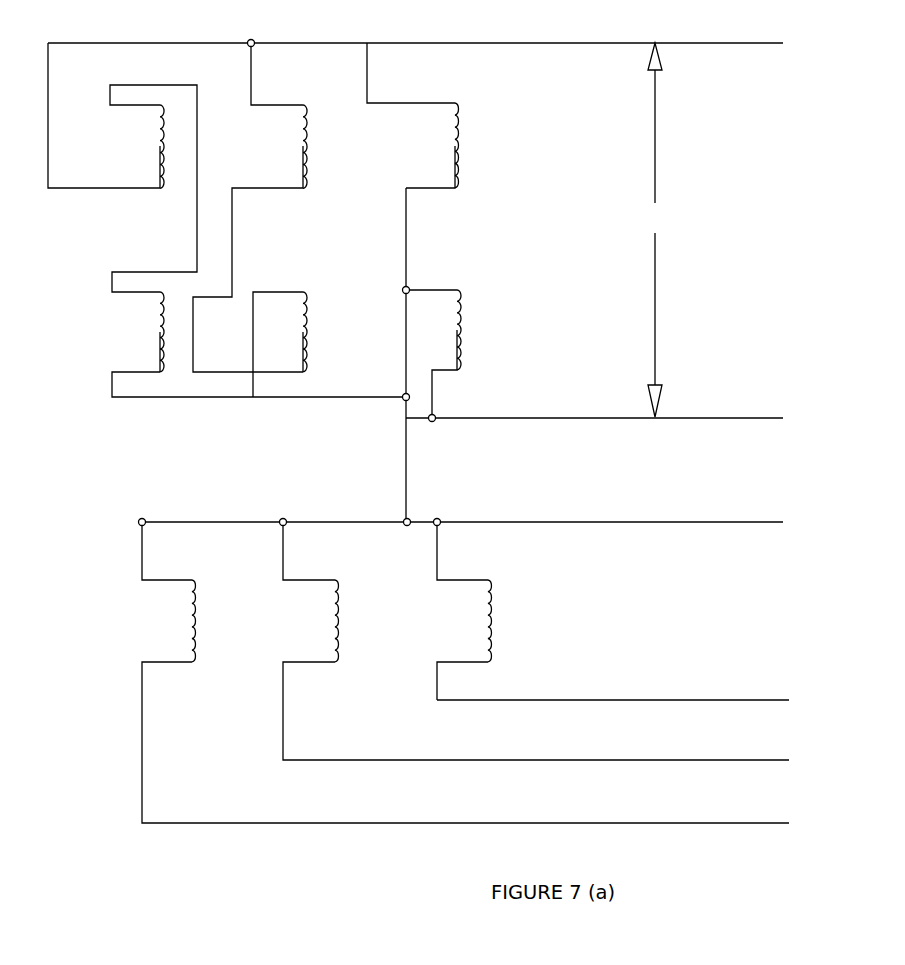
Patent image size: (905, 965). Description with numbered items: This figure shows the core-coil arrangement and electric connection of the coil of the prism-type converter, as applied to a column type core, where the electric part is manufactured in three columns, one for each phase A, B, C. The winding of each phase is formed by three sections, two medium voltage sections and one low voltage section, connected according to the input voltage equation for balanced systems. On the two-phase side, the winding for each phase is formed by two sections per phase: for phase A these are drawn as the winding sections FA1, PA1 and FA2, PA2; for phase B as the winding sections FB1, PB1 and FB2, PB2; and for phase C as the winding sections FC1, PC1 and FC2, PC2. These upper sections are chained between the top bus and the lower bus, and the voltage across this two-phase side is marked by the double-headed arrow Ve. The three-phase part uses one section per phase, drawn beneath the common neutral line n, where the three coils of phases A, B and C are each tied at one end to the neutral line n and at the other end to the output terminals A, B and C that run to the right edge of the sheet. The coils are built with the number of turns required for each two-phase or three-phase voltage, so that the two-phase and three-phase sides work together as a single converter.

The phase A field winding 1 FA1 is at (122, 167).
The phase A parallel winding 1 PA1 is at (140, 167).
The phase A field winding 2 FA2 is at (259, 344).
The phase A parallel winding 2 PA2 is at (140, 352).
The phase B field winding 1 FB1 is at (279, 115).
The phase B parallel winding 1 PB1 is at (248, 259).
The phase B field winding 2 FB2 is at (280, 344).
The phase B parallel winding 2 PB2 is at (284, 352).
The phase C field winding 1 FC1 is at (412, 115).
The phase C parallel winding 1 PC1 is at (430, 167).
The phase C field winding 2 FC2 is at (433, 330).
The phase C parallel winding 2 PC2 is at (439, 374).
The excitation voltage Ve is at (654, 230).
The neutral line n is at (462, 507).
The phase A is at (465, 672).
The phase B is at (536, 641).
The phase C is at (588, 667).